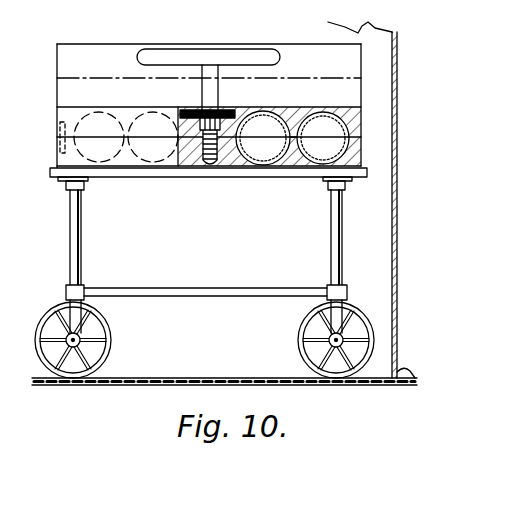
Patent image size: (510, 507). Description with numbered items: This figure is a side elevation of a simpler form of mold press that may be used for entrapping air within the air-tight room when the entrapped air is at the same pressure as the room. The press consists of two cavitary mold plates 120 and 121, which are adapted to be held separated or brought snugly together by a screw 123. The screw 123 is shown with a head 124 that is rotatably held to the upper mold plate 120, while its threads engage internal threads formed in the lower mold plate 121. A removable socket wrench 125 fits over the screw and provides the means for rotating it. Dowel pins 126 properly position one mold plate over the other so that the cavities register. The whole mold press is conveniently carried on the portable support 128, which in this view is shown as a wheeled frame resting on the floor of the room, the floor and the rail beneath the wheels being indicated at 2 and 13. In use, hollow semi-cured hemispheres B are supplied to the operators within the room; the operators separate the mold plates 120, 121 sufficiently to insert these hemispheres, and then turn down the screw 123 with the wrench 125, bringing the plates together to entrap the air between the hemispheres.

The floor 2 is at (194, 378).
The track rail 13 is at (266, 378).
The cavitary mold plate 120 is at (57, 62).
The cavitary mold plate 121 is at (57, 90).
The screw 123 is at (218, 108).
The head 124 is at (200, 108).
The removable socket wrench 125 is at (280, 58).
The dowel pins 126 is at (286, 136).
The portable support 128 is at (256, 178).
The hollow semi-cured hemisphere B is at (338, 126).